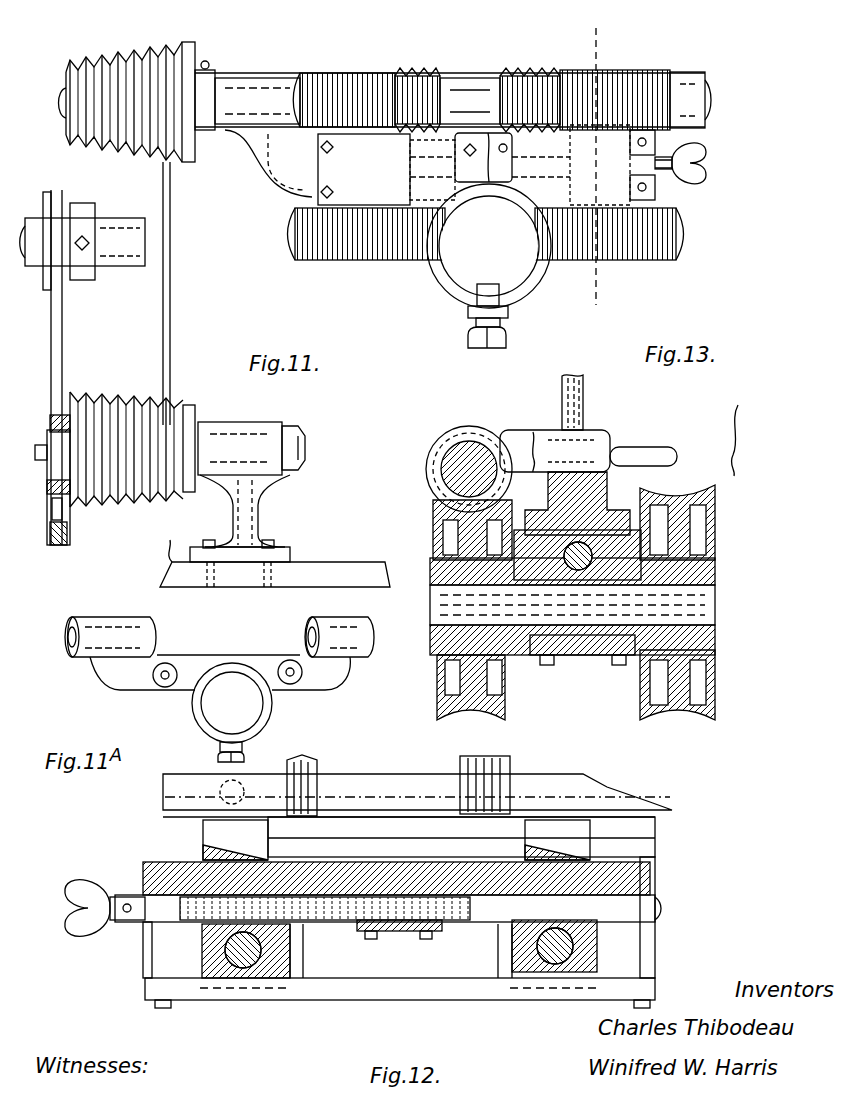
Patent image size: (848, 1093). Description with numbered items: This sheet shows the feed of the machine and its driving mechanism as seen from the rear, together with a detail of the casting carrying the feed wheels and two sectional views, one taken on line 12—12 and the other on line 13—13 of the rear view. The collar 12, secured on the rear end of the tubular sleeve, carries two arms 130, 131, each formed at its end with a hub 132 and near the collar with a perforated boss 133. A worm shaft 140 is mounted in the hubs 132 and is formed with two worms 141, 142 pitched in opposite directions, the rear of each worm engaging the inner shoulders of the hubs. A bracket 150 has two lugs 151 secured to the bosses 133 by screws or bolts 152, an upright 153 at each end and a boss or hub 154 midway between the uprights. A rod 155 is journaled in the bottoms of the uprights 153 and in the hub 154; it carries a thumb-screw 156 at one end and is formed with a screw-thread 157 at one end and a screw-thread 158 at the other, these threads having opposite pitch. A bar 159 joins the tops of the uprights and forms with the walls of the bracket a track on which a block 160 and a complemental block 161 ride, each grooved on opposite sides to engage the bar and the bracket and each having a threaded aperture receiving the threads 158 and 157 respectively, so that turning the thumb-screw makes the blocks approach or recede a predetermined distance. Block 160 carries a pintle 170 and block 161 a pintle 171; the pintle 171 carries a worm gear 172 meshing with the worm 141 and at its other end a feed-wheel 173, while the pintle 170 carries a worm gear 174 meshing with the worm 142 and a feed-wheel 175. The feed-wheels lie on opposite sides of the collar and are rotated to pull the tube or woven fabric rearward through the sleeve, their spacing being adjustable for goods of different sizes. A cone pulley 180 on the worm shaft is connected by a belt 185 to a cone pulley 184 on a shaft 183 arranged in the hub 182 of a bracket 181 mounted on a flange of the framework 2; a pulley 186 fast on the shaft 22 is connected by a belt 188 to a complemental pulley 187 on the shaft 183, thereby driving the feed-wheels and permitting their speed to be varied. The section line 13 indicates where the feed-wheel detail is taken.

In FIG. 11, the framework 2 is at (359, 575).
In FIG. 11, the collar 12 is at (316, 171).
In FIG. 11A, the collar 12 is at (275, 697).
In FIG. 13, the collar 12 is at (561, 373).
In FIG. 12, the collar 12 is at (466, 760).
In FIG. 11, the section line 13— 13 is at (426, 344).
In FIG. 11A, the section line 13— 13 is at (246, 755).
In FIG. 11, the shaft 22 is at (125, 230).
In FIG. 11A, the arm 130 is at (335, 672).
In FIG. 11A, the arm 131 is at (110, 680).
In FIG. 11, the hub 132 is at (265, 77).
In FIG. 11A, the hub 132 is at (133, 617).
In FIG. 13, the hub 132 is at (427, 464).
In FIG. 11A, the perforated boss 133 is at (280, 662).
In FIG. 11, the worm shaft 140 is at (477, 77).
In FIG. 11, the worm 141 is at (536, 67).
In FIG. 11, the worm 142 is at (421, 67).
In FIG. 12, the bracket 150 is at (386, 850).
In FIG. 13, the lug 151 is at (527, 452).
In FIG. 12, the lug 151 is at (201, 840).
In FIG. 13, the screw or bolt 152 is at (618, 450).
In FIG. 12, the screw or bolt 152 is at (245, 793).
In FIG. 12, the upright 153 is at (648, 930).
In FIG. 12, the boss or hub 154 is at (405, 939).
In FIG. 12, the rod 155 is at (662, 908).
In FIG. 11, the thumb-screw 156 is at (692, 180).
In FIG. 12, the thumb-screw 156 is at (78, 884).
In FIG. 12, the screw-thread 157 is at (472, 935).
In FIG. 13, the screw-thread 158 is at (596, 506).
In FIG. 12, the screw-thread 158 is at (303, 926).
In FIG. 13, the bar 159 is at (581, 672).
In FIG. 12, the bar 159 is at (357, 990).
In FIG. 13, the block 160 is at (632, 548).
In FIG. 12, the block 160 is at (205, 963).
In FIG. 12, the complemental block 161 is at (598, 950).
In FIG. 12, the pintle 170 is at (542, 975).
In FIG. 13, the pintle 171 is at (698, 590).
In FIG. 12, the pintle 171 is at (231, 977).
In FIG. 11, the worm gear 172 is at (658, 70).
In FIG. 13, the worm gear 172 is at (505, 690).
In FIG. 11, the feed-wheel 173 is at (663, 262).
In FIG. 13, the feed-wheel 173 is at (696, 712).
In FIG. 11, the worm gear 174 is at (314, 72).
In FIG. 11, the feed-wheel 175 is at (296, 243).
In FIG. 11, the cone pulley 180 is at (189, 46).
In FIG. 11, the bracket 181 is at (268, 525).
In FIG. 11, the hub 182 is at (243, 420).
In FIG. 11, the shaft 183 is at (306, 446).
In FIG. 11, the cone pulley 184 is at (132, 522).
In FIG. 11, the belt 185 is at (170, 321).
In FIG. 11, the pulley 186 is at (72, 208).
In FIG. 11, the complemental pulley 187 is at (47, 548).
In FIG. 11, the belt 188 is at (63, 328).